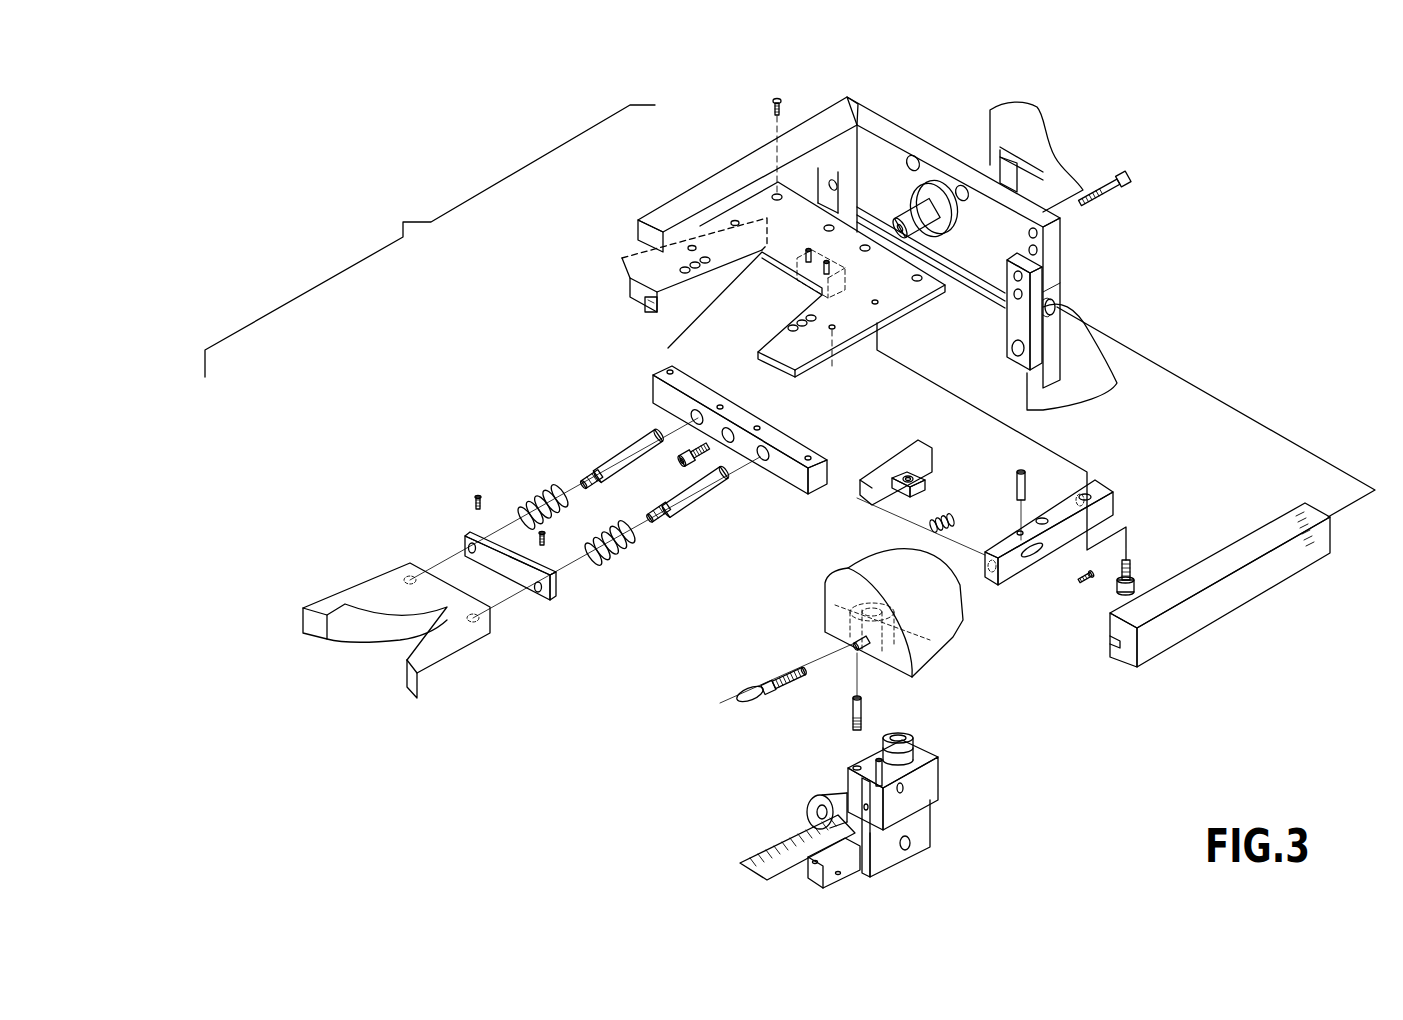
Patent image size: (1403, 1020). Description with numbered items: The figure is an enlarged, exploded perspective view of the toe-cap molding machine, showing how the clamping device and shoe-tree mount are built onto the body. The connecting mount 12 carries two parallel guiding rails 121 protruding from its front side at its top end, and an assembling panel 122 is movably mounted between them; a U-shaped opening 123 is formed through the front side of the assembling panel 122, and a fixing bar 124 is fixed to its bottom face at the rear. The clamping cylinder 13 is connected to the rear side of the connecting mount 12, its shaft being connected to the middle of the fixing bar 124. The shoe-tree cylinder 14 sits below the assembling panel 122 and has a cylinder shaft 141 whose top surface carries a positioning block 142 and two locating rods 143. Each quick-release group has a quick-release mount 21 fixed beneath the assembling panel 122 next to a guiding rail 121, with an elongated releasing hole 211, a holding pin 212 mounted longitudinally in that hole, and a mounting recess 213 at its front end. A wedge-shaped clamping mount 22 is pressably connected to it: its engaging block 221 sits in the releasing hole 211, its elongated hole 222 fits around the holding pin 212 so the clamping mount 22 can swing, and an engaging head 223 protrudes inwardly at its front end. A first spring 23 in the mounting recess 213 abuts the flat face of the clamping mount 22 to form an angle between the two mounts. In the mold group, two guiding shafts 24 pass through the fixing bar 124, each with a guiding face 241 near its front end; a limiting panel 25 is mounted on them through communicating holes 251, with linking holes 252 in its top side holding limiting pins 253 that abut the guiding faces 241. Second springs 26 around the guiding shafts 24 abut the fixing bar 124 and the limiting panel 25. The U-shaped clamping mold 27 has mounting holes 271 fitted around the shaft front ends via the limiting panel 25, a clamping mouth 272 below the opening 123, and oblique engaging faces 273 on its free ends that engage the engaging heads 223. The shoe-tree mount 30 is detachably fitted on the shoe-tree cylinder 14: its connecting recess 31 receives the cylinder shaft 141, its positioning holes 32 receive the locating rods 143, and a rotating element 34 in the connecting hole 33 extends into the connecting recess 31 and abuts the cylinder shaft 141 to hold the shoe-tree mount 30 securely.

The connecting mount 12 is at (983, 382).
The guiding rails 121 is at (728, 177).
The assembling panel 122 is at (633, 267).
The opening 123 is at (758, 346).
The fixing bar 124 is at (658, 386).
The clamping cylinder 13 is at (1062, 143).
The shoe-tree cylinder 14 is at (885, 792).
The cylinder shaft 141 is at (916, 744).
The positioning block 142 is at (935, 785).
The locating rod 143 is at (852, 712).
The quick-release mount 21 is at (1081, 539).
The releasing hole 211 is at (1030, 555).
The holding pin 212 is at (1019, 472).
The mounting recess 213 is at (1010, 578).
The clamping mount 22 is at (891, 464).
The engaging block 221 is at (923, 481).
The elongated hole 222 is at (910, 475).
The engaging head 223 is at (862, 486).
The first spring 23 is at (932, 524).
The guiding shaft 24 is at (591, 439).
The guiding face 241 is at (622, 437).
The limiting panel 25 is at (509, 570).
The communicating holes 251 is at (541, 592).
The linking holes 252 is at (475, 532).
The limiting pins 253 is at (477, 503).
The second springs 26 is at (540, 492).
The clamping mold 27 is at (372, 639).
The mounting holes 271 is at (410, 578).
The clamping mouth 272 is at (353, 620).
The engaging faces 273 is at (313, 625).
The shoe-tree mount 30 is at (858, 636).
The connecting recess 31 is at (900, 627).
The positioning hole 32 is at (880, 658).
The connecting hole 33 is at (855, 646).
The rotating element 34 is at (740, 692).